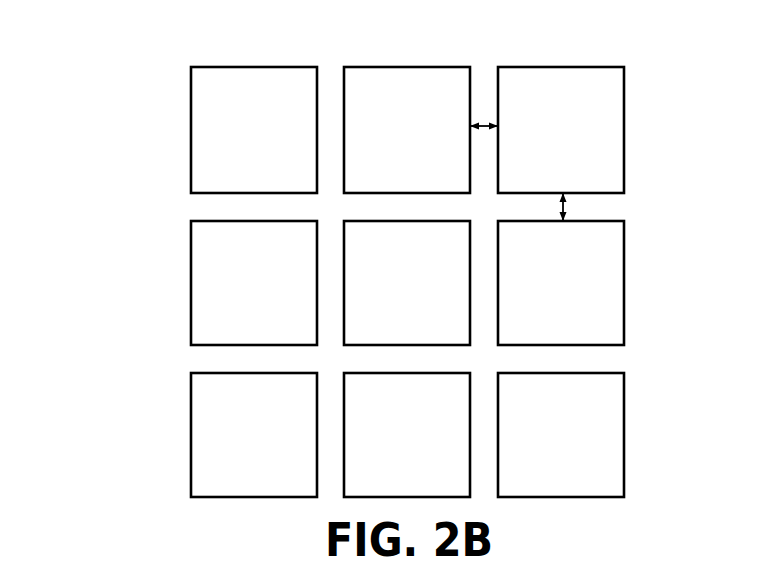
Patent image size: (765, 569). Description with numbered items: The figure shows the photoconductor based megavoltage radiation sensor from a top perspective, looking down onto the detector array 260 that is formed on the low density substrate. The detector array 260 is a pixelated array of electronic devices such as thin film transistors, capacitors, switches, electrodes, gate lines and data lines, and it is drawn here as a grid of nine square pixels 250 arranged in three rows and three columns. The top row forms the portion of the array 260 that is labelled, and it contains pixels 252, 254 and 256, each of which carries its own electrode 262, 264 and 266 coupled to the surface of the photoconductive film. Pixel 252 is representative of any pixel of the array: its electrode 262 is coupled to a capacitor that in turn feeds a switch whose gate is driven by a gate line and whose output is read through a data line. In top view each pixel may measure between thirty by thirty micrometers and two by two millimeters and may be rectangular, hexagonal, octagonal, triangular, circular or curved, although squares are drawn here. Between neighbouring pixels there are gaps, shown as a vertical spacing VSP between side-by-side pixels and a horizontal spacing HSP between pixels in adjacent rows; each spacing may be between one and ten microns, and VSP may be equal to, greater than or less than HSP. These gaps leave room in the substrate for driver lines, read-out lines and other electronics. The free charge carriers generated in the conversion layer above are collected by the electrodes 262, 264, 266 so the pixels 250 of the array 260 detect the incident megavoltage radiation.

The pixels 250 is at (130, 315).
The detector array 260 is at (140, 185).
The pixel 252 is at (175, 90).
The pixel 254 is at (371, 64).
The pixel 256 is at (586, 64).
The electrode 262 is at (277, 140).
The electrode 264 is at (428, 140).
The electrode 266 is at (582, 140).
The vertical spacing VSP is at (487, 122).
The horizontal spacing HSP is at (568, 204).